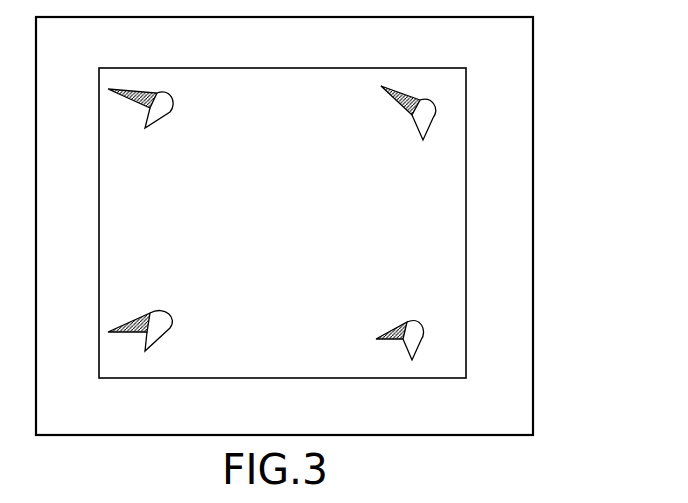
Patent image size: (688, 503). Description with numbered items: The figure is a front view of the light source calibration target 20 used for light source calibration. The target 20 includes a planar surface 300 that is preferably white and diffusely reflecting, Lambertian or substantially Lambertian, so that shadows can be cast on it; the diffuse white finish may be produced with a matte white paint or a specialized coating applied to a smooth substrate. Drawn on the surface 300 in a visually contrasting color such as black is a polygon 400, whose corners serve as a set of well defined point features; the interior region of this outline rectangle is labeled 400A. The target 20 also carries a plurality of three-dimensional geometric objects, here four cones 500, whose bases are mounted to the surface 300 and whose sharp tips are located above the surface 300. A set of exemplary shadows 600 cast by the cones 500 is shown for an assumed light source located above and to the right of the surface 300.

The light source calibration target 20 is at (598, 220).
The planar surface 300 is at (533, 57).
The polygon 400 is at (466, 204).
The screen area 400A is at (309, 236).
The cones 500 is at (168, 113).
The shadows 600 is at (140, 112).